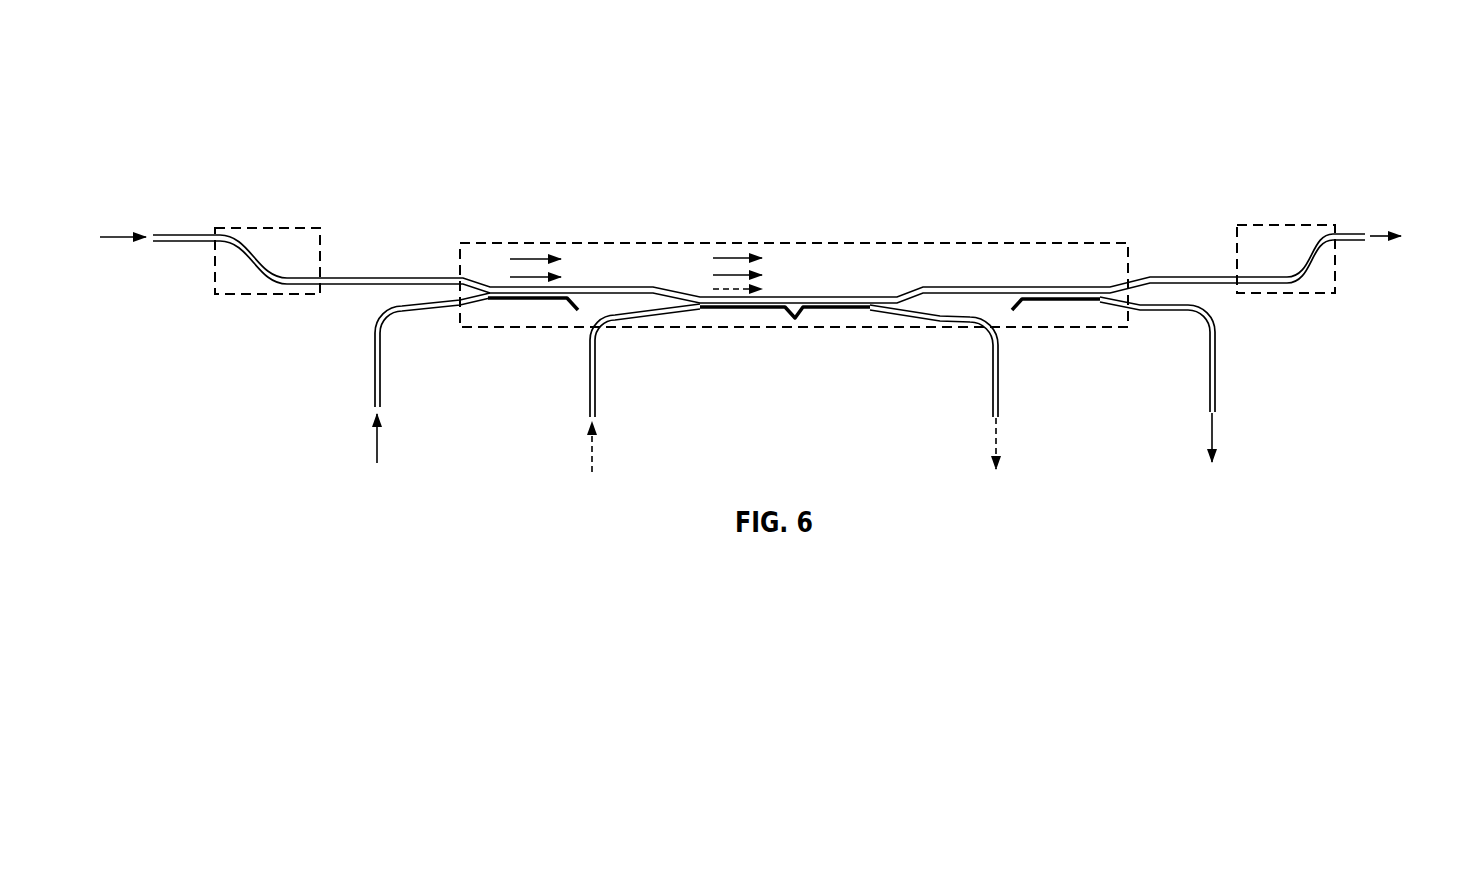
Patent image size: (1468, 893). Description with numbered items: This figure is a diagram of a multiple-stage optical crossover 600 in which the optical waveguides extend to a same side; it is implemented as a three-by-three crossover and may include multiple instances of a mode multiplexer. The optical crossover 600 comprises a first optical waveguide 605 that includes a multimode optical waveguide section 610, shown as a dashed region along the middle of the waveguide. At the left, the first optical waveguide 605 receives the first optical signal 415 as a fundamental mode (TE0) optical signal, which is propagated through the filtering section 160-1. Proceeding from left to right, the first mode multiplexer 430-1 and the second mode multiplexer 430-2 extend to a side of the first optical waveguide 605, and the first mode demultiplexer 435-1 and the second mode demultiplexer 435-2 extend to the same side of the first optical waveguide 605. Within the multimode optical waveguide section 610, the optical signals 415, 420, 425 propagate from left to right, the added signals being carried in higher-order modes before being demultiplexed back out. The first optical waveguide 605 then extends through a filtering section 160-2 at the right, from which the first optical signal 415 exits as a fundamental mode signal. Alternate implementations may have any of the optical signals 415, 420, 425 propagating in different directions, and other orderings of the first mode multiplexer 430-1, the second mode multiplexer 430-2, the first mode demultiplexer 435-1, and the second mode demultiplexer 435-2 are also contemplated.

The multiple-stage optical crossover 600 is at (1314, 91).
The first optical waveguide 605 is at (925, 287).
The multimode optical waveguide section 610 is at (1075, 242).
The filtering section 160-1 is at (243, 295).
The filtering section 160-2 is at (1313, 295).
The first optical signal 415 is at (138, 202).
The optical signal 420 is at (530, 275).
The optical signal 425 is at (752, 290).
The first mode multiplexer 430-1 is at (403, 310).
The second mode multiplexer 430-2 is at (616, 322).
The first mode demultiplexer 435-1 is at (988, 337).
The second mode demultiplexer 435-2 is at (1198, 323).